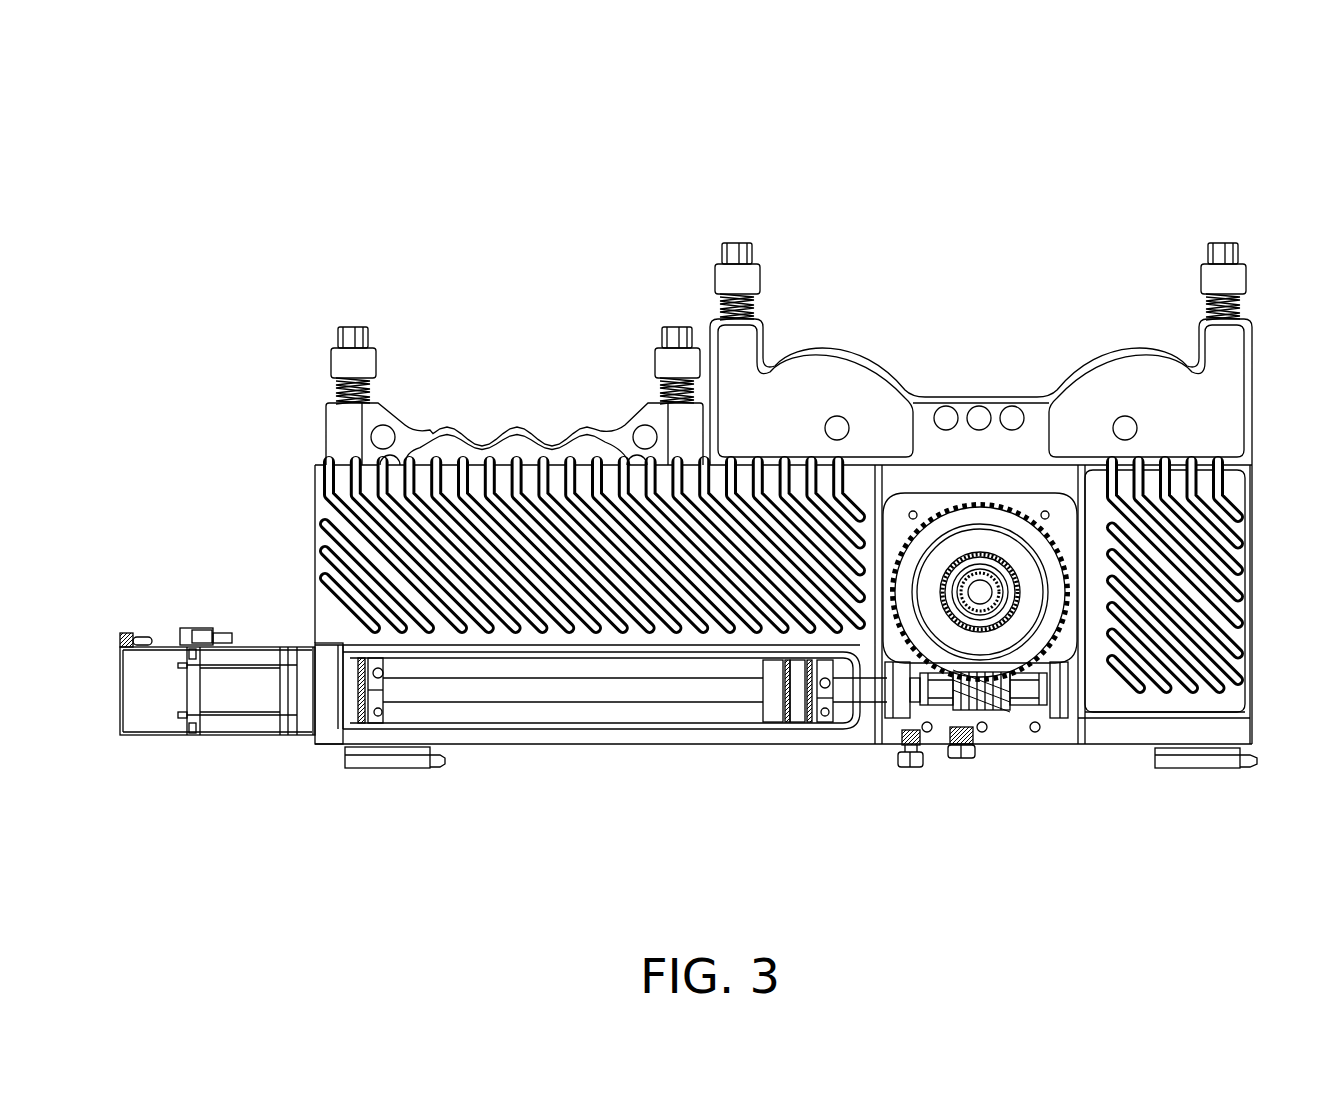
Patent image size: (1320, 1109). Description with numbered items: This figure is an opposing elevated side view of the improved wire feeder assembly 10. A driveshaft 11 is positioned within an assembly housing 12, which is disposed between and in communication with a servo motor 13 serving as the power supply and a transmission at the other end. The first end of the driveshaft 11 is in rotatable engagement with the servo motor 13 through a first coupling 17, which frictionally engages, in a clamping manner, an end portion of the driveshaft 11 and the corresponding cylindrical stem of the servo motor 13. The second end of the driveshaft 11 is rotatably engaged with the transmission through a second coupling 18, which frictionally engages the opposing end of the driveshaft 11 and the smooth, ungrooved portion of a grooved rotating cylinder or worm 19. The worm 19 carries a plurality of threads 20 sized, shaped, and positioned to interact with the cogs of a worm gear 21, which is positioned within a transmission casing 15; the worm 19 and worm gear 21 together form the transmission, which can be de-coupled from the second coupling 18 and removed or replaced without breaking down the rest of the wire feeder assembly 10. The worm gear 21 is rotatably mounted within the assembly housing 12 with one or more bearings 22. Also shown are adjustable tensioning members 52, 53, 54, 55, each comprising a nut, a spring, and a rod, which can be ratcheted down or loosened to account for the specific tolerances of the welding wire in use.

The wire feeder assembly 10 is at (150, 133).
The driveshaft 11 is at (580, 690).
The assembly housing 12 is at (322, 540).
The servo motor 13 is at (181, 636).
The transmission casing 15 is at (1072, 482).
The first coupling 17 is at (352, 705).
The second coupling 18 is at (807, 718).
The worm 19 is at (1017, 693).
The threads 20 is at (962, 713).
The worm gear 21 is at (933, 520).
The bearings 22 is at (1000, 555).
The adjustable tensioning member 52 is at (353, 335).
The adjustable tensioning member 53 is at (677, 335).
The adjustable tensioning member 54 is at (738, 250).
The adjustable tensioning member 55 is at (1222, 250).